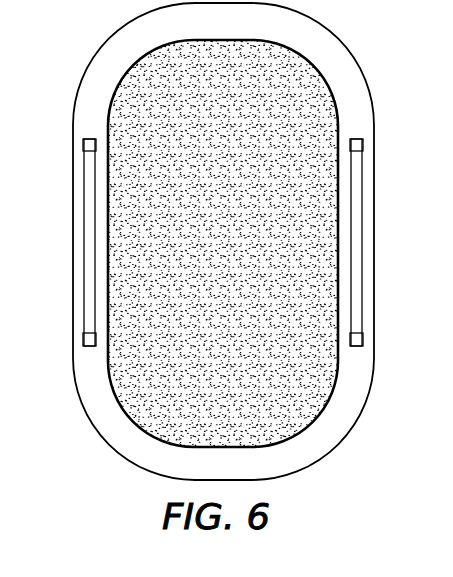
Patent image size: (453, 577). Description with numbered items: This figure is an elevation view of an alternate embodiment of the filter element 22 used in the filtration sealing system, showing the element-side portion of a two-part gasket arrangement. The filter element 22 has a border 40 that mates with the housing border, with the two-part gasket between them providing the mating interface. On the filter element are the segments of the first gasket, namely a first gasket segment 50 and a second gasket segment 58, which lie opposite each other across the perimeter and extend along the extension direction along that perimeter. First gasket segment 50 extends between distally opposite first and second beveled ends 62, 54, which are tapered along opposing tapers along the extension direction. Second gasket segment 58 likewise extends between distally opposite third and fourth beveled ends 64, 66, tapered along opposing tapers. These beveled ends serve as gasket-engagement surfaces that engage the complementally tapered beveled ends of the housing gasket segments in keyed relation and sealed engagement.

The filter element 22 is at (138, 88).
The border 40 is at (90, 101).
The first gasket segment 50 is at (355, 242).
The second beveled end 54 is at (362, 145).
The second gasket segment 58 is at (88, 227).
The first beveled end 62 is at (362, 342).
The third beveled end 64 is at (83, 147).
The fourth beveled end 66 is at (83, 342).